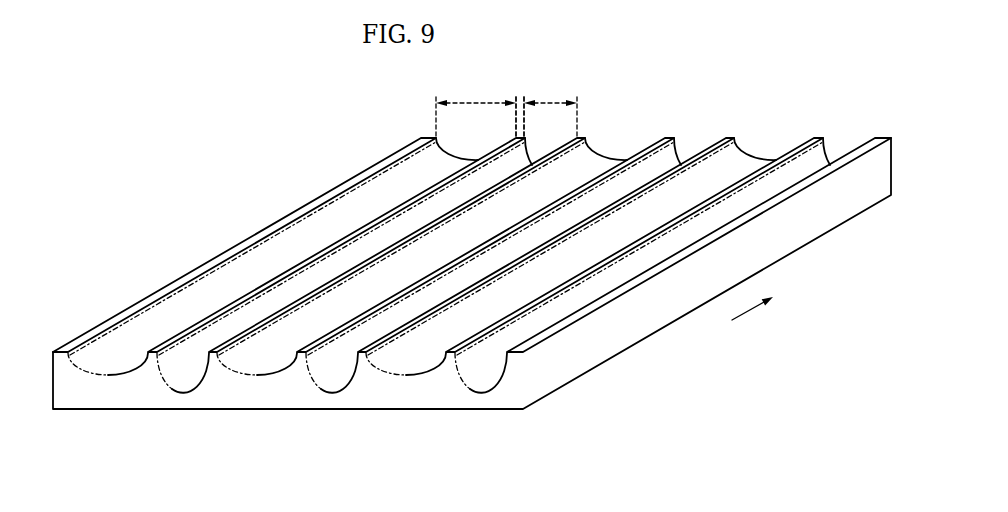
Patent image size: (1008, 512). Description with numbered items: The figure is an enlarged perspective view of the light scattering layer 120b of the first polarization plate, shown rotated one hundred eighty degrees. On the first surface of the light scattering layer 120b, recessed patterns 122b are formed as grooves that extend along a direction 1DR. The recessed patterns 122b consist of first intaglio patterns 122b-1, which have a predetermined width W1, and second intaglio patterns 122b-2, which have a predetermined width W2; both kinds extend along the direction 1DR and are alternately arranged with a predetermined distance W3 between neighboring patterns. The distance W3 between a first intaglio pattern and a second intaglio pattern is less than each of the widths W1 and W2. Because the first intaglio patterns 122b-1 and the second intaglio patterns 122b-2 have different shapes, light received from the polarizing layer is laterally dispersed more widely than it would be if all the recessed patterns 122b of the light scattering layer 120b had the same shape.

The light scattering layer 120b is at (405, 461).
The recessed patterns 122b is at (449, 263).
The first intaglio patterns 122b-1 is at (272, 248).
The second intaglio patterns 122b-2 is at (354, 242).
The width of first intaglio pattern W1 is at (476, 105).
The width of second intaglio pattern W2 is at (550, 105).
The distance between first and second intaglio patterns W3 is at (519, 105).
The direction 1DR is at (733, 323).